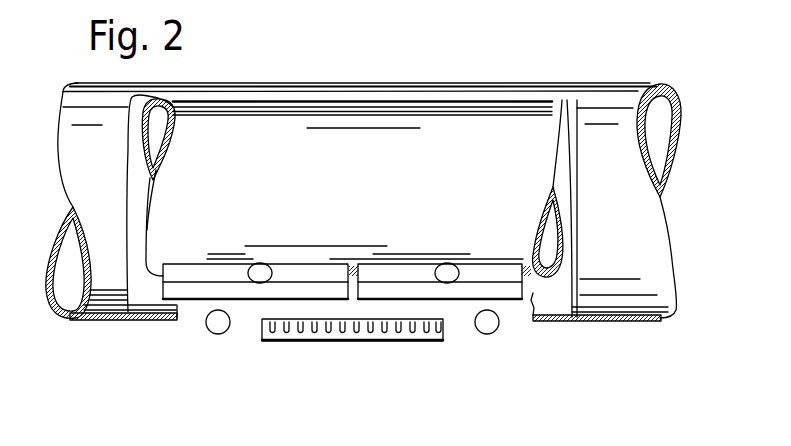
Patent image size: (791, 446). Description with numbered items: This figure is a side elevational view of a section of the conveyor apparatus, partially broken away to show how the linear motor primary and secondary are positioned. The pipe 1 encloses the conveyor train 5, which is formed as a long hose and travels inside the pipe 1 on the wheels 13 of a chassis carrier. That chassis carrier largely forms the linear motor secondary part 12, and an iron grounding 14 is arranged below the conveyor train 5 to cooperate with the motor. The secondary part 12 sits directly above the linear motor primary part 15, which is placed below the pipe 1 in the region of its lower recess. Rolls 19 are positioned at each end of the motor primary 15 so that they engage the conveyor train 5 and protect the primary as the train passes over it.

The pipe 1 is at (603, 110).
The conveyor train 5 is at (487, 123).
The linear motor secondary part 12 is at (503, 287).
The wheels 13 is at (258, 276).
The iron grounding support 14 is at (200, 270).
The linear motor primary part 15 is at (342, 334).
The rolls 19 is at (484, 328).